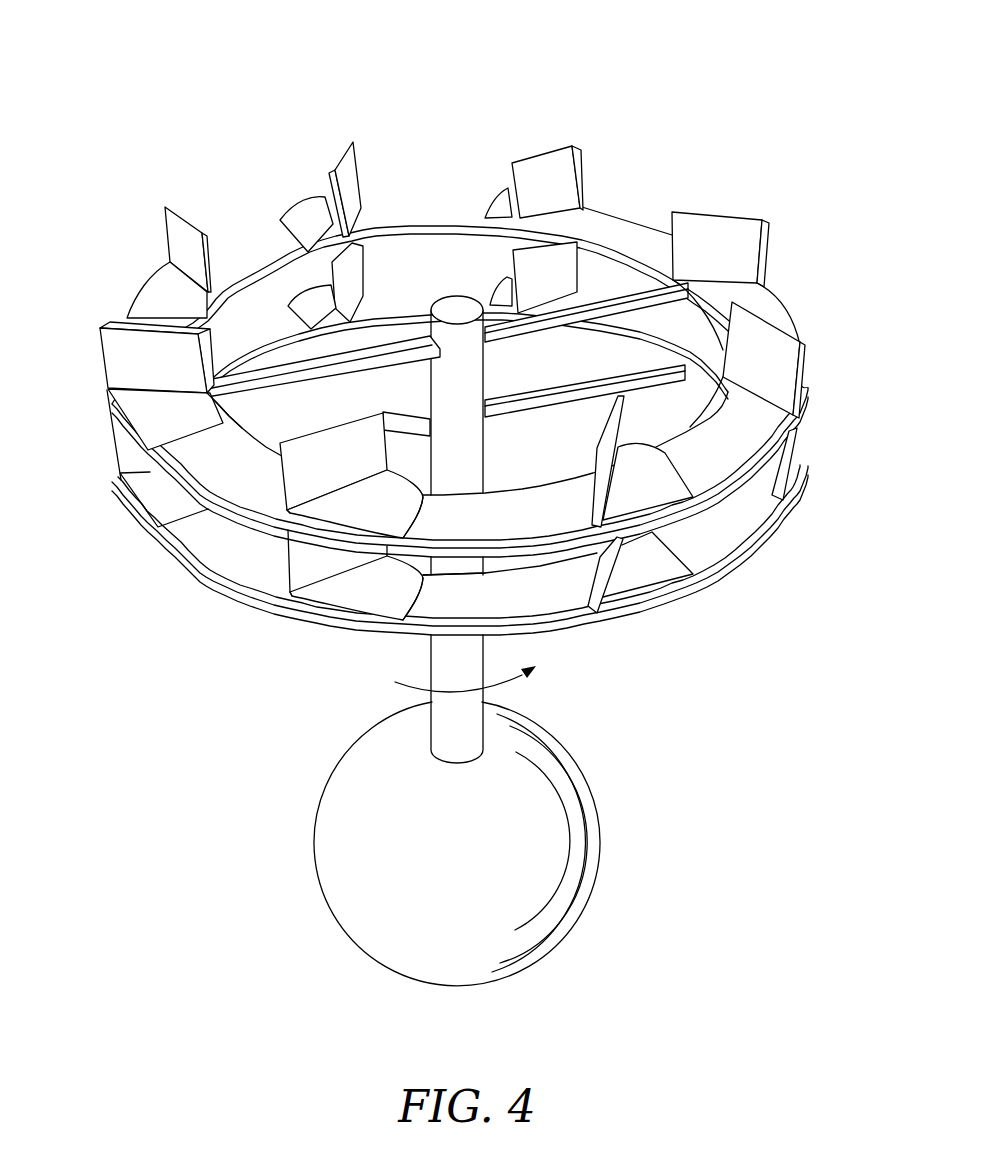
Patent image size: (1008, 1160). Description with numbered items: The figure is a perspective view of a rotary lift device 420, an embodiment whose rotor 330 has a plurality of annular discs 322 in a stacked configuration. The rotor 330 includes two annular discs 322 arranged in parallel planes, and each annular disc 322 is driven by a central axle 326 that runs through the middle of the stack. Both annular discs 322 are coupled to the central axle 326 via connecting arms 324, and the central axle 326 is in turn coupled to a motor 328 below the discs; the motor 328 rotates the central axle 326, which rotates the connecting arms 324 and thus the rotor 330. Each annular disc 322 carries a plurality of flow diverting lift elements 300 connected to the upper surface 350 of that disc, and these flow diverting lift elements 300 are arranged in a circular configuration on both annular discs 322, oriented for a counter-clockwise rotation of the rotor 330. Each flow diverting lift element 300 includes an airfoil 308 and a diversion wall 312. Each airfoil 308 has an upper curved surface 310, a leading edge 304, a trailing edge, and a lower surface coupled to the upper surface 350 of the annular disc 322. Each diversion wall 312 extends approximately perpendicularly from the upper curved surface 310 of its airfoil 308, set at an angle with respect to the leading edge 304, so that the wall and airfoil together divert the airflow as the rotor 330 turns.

The flow diverting lift element 300 is at (300, 217).
The leading edge 304 is at (413, 513).
The airfoil 308 is at (352, 508).
The upper curved surface 310 is at (363, 508).
The diversion wall 312 is at (342, 437).
The annular disc 322 is at (440, 210).
The connecting arm 324 is at (283, 378).
The central axle 326 is at (481, 373).
The motor 328 is at (588, 800).
The rotor 330 is at (776, 643).
The upper surface 350 is at (244, 480).
The rotary lift device 420 is at (540, 78).